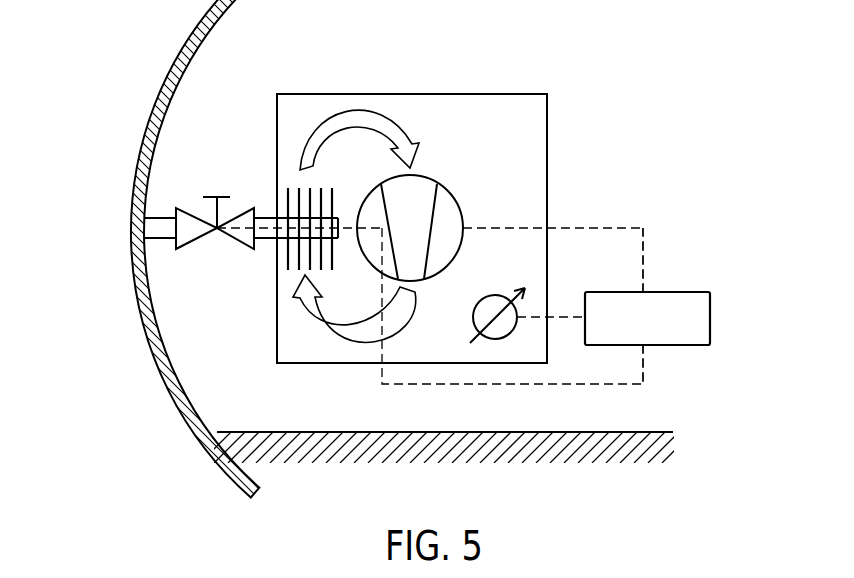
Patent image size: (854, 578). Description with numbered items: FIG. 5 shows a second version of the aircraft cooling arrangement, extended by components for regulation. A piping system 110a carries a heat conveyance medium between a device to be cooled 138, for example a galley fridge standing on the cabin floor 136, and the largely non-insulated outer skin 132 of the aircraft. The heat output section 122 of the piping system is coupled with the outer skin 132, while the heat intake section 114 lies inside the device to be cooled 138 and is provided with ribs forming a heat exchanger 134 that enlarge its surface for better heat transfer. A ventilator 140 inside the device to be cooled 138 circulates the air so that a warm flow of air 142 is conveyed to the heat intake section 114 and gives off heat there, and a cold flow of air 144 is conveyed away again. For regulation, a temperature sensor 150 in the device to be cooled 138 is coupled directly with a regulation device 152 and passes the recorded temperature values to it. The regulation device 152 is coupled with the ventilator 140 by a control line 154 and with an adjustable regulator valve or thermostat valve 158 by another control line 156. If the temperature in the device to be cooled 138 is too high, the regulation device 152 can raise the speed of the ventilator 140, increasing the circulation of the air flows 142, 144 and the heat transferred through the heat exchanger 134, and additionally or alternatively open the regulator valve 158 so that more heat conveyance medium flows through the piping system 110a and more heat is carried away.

The outer skin 132 is at (140, 150).
The heat output section 122 is at (133, 222).
The piping system 110a is at (157, 216).
The regulator valve 158 is at (217, 250).
The heat intake section 114 is at (286, 254).
The heat exchanger 134 is at (283, 200).
The device to be cooled 138 is at (547, 116).
The ventilator 140 is at (455, 196).
The cold flow of air 144 is at (398, 117).
The warm flow of air 142 is at (342, 342).
The temperature sensor 150 is at (492, 340).
The regulation device 152 is at (710, 318).
The control line 154 is at (645, 250).
The control line 156 is at (645, 362).
The cabin floor 136 is at (600, 432).